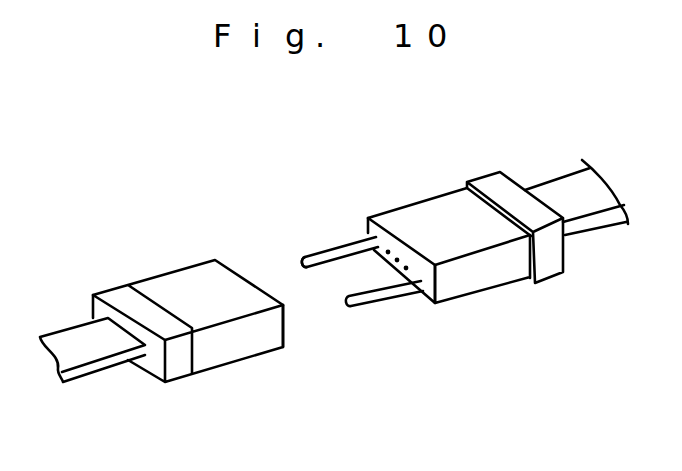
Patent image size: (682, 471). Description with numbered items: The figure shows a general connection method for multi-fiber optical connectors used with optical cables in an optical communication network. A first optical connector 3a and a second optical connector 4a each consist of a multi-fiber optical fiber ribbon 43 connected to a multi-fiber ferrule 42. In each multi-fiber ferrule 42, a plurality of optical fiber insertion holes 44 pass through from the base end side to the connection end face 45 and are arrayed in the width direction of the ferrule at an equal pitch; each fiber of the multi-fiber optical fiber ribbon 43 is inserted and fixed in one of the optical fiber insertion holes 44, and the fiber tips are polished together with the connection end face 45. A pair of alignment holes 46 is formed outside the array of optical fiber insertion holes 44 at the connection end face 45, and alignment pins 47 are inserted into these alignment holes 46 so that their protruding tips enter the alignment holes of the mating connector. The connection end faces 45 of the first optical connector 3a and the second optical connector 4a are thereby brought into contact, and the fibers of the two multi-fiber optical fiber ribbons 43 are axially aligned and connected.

The multi-fiber ferrule 42 is at (172, 282).
The multi-fiber optical fiber ribbon 43 is at (80, 335).
The optical fiber insertion holes 44 is at (389, 250).
The connection end face 45 is at (283, 332).
The alignment holes 46 is at (373, 238).
The alignment pins 47 is at (310, 253).
The second optical connector 4a is at (230, 370).
The first optical connector 3a is at (483, 282).